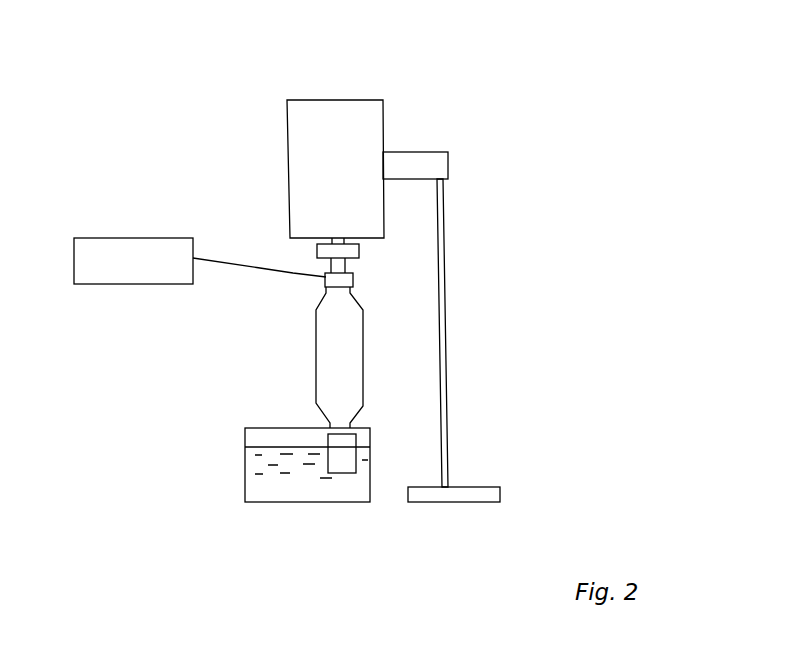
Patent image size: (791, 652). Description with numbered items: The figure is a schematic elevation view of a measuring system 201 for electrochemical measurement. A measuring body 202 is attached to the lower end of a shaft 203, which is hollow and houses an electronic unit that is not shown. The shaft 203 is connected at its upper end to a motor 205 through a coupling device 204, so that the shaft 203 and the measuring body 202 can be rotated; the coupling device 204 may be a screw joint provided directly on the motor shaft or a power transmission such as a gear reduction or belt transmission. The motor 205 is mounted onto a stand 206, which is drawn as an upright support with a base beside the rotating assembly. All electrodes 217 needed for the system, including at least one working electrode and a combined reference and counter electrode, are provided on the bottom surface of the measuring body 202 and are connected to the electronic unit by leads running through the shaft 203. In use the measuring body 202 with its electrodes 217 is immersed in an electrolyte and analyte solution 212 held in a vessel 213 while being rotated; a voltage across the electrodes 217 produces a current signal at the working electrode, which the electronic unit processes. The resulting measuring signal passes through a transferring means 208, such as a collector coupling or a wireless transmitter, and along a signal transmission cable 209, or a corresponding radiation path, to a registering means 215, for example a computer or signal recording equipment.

The measuring system 201 is at (194, 157).
The measuring body 202 is at (377, 479).
The shaft 203 is at (360, 355).
The coupling device 204 is at (359, 252).
The motor 205 is at (383, 112).
The stand 206 is at (453, 277).
The transferring means 208 is at (353, 280).
The signal transmission cable 209 is at (257, 267).
The electrolyte and analyte solution 212 is at (255, 447).
The vessel 213 is at (245, 475).
The registering means 215 is at (107, 284).
The electrodes 217 is at (348, 473).